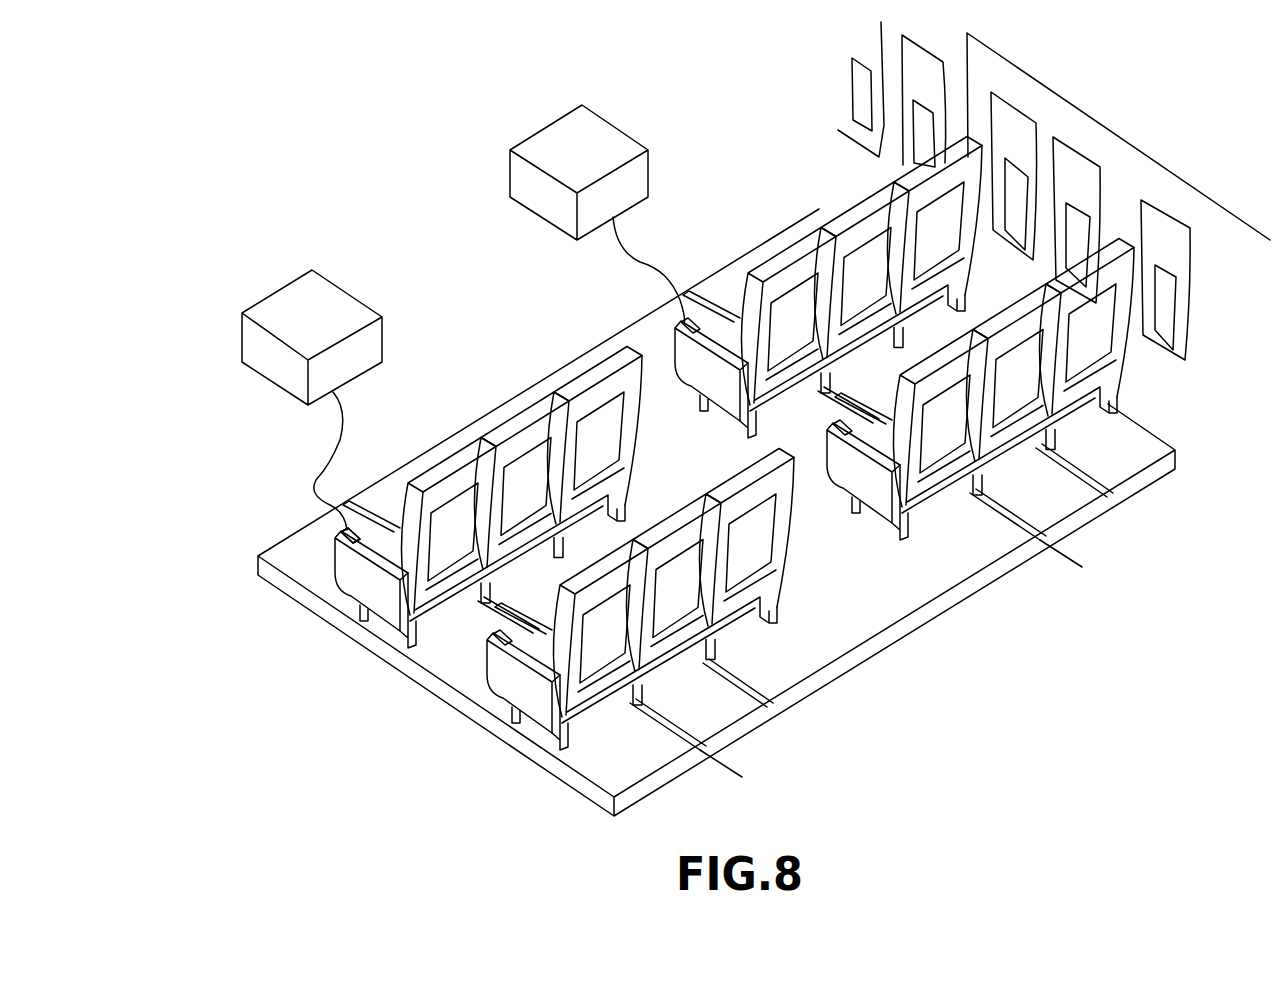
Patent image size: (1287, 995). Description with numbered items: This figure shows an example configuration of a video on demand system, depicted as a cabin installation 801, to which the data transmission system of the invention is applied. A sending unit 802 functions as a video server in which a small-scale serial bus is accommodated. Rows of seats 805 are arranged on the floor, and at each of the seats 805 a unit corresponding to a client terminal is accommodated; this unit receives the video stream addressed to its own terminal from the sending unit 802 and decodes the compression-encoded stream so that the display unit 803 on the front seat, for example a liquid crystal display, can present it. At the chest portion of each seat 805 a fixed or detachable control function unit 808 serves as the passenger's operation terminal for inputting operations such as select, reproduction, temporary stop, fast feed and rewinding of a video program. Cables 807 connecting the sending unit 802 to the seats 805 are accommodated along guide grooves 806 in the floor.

The passenger cabin 801 is at (1198, 706).
The sending unit 802 is at (543, 125).
The display unit 803 is at (463, 507).
The seat 805 is at (588, 382).
The guide groove 806 is at (1033, 518).
The cable 807 is at (630, 257).
The control function unit 808 is at (343, 540).